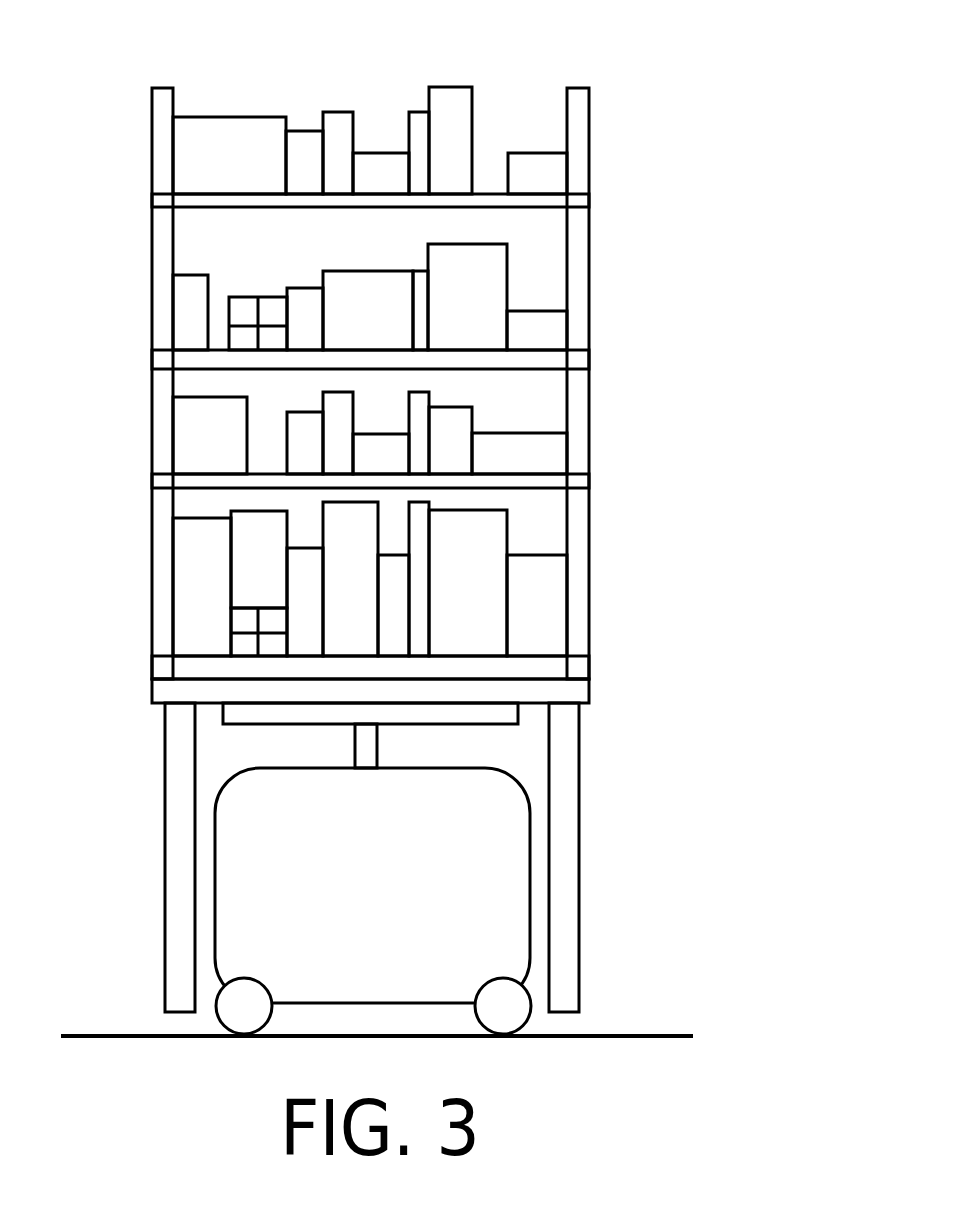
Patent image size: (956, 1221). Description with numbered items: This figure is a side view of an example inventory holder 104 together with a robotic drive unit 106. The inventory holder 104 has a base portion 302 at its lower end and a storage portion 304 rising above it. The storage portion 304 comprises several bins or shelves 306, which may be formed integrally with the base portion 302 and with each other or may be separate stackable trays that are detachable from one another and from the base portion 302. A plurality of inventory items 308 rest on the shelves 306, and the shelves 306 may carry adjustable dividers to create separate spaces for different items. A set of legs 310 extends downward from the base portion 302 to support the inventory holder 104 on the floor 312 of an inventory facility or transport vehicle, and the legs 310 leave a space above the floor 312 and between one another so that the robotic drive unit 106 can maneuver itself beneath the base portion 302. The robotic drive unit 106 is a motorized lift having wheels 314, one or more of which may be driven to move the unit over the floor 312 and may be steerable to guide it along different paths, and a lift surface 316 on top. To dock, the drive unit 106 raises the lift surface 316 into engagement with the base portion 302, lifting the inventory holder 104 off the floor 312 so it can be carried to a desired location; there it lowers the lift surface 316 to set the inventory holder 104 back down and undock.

The inventory holder 104 is at (535, 66).
The robotic drive unit 106 is at (505, 872).
The base portion 302 is at (606, 703).
The storage portion 304 is at (604, 596).
The shelves 306 is at (578, 130).
The inventory items 308 is at (305, 135).
The legs 310 is at (172, 838).
The floor 312 is at (105, 1035).
The wheels 314 is at (238, 1015).
The lift surface 316 is at (247, 718).